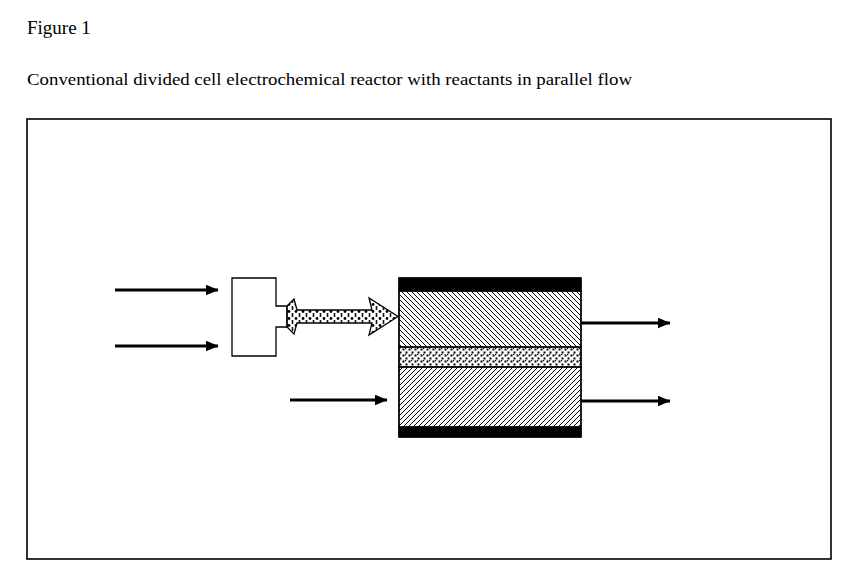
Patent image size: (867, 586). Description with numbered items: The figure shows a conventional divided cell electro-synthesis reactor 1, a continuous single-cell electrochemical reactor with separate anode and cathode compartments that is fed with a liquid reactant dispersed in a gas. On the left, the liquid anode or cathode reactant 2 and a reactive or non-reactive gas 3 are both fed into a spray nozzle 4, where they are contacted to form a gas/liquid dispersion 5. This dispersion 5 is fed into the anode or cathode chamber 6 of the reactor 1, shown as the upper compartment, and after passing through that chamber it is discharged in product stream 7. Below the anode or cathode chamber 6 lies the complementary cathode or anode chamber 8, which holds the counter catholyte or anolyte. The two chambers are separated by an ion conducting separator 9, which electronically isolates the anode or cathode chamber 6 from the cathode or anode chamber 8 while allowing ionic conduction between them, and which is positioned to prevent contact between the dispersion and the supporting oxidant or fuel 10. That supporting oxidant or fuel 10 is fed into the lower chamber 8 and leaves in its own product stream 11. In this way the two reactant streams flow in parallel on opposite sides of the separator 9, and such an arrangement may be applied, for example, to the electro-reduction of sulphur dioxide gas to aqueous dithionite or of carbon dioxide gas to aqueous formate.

The divided cell electro-synthesis reactor 1 is at (545, 271).
The liquid anode or cathode reactant 2 is at (148, 347).
The reactive or non-reactive gas 3 is at (148, 293).
The spray nozzle 4 is at (250, 275).
The gas/liquid dispersion 5 is at (348, 303).
The anode or cathode chamber 6 is at (488, 276).
The product stream 7 is at (643, 318).
The cathode or anode chamber 8 is at (488, 439).
The ion conducting separator 9 is at (584, 358).
The supporting oxidant or fuel 10 is at (322, 403).
The product stream 11 is at (648, 403).